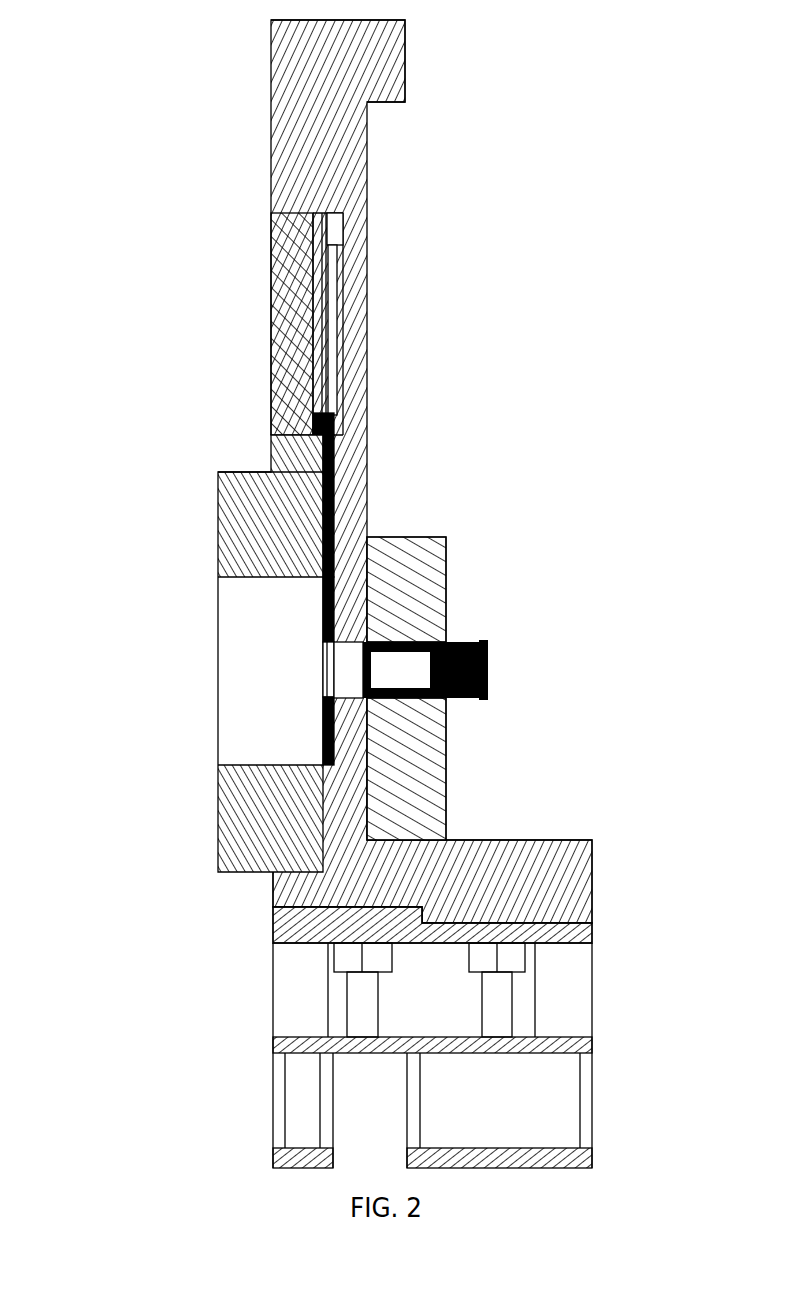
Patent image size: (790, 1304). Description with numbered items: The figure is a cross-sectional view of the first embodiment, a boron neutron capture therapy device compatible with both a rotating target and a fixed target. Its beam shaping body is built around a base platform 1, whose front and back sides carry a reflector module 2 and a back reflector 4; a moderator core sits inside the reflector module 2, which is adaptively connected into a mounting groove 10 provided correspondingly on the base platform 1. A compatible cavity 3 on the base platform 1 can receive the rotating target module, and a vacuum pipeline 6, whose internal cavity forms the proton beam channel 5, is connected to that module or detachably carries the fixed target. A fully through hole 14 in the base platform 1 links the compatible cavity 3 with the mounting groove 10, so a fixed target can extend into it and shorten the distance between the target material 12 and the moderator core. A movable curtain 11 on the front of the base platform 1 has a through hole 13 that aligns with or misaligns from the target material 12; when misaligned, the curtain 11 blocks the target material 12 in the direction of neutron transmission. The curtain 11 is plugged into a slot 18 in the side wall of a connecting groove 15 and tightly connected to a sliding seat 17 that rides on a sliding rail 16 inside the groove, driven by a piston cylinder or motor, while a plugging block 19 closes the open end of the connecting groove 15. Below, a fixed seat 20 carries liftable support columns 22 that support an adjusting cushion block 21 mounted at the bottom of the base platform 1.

The base platform 1 is at (355, 480).
The reflector module 2 is at (218, 872).
The compatible cavity 3 is at (378, 292).
The back reflector 4 is at (437, 783).
The proton beam channel 5 is at (405, 665).
The vacuum pipeline 6 is at (480, 672).
The mounting groove 10 is at (271, 440).
The curtain 11 is at (323, 613).
The target material 12 is at (358, 675).
The through hole 13 is at (323, 690).
The fully through hole 14 is at (323, 717).
The connecting groove 15 is at (325, 407).
The sliding rail 16 is at (313, 349).
The sliding seat 17 is at (313, 418).
The slot 18 is at (323, 521).
The plugging block 19 is at (271, 213).
The fixed seat 20 is at (287, 1053).
The adjusting cushion block 21 is at (273, 943).
The support columns 22 is at (507, 990).